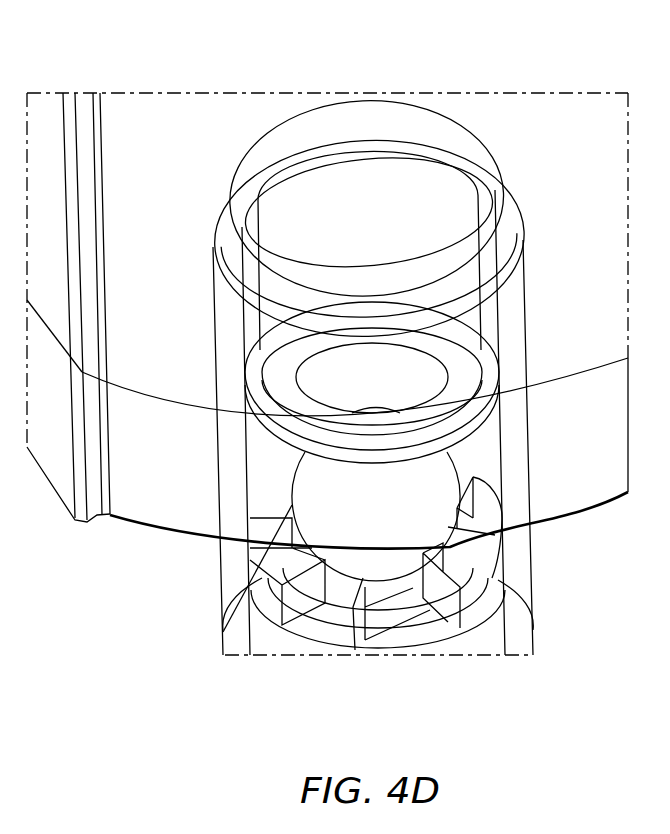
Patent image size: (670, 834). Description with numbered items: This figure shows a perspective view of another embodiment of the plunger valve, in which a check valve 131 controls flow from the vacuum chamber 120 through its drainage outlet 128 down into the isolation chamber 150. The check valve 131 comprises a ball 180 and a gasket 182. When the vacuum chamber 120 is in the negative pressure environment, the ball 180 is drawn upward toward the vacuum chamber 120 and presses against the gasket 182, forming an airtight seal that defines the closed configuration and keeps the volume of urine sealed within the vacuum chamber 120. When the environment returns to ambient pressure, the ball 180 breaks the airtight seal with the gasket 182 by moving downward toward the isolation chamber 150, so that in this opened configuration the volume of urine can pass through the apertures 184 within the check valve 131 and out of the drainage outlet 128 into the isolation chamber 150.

The vacuum chamber 120 is at (175, 123).
The drainage outlet 128 is at (345, 228).
The gasket 182 is at (458, 422).
The check valve 131 is at (528, 472).
The ball 180 is at (365, 508).
The isolation chamber 150 is at (253, 622).
The apertures 184 is at (333, 616).